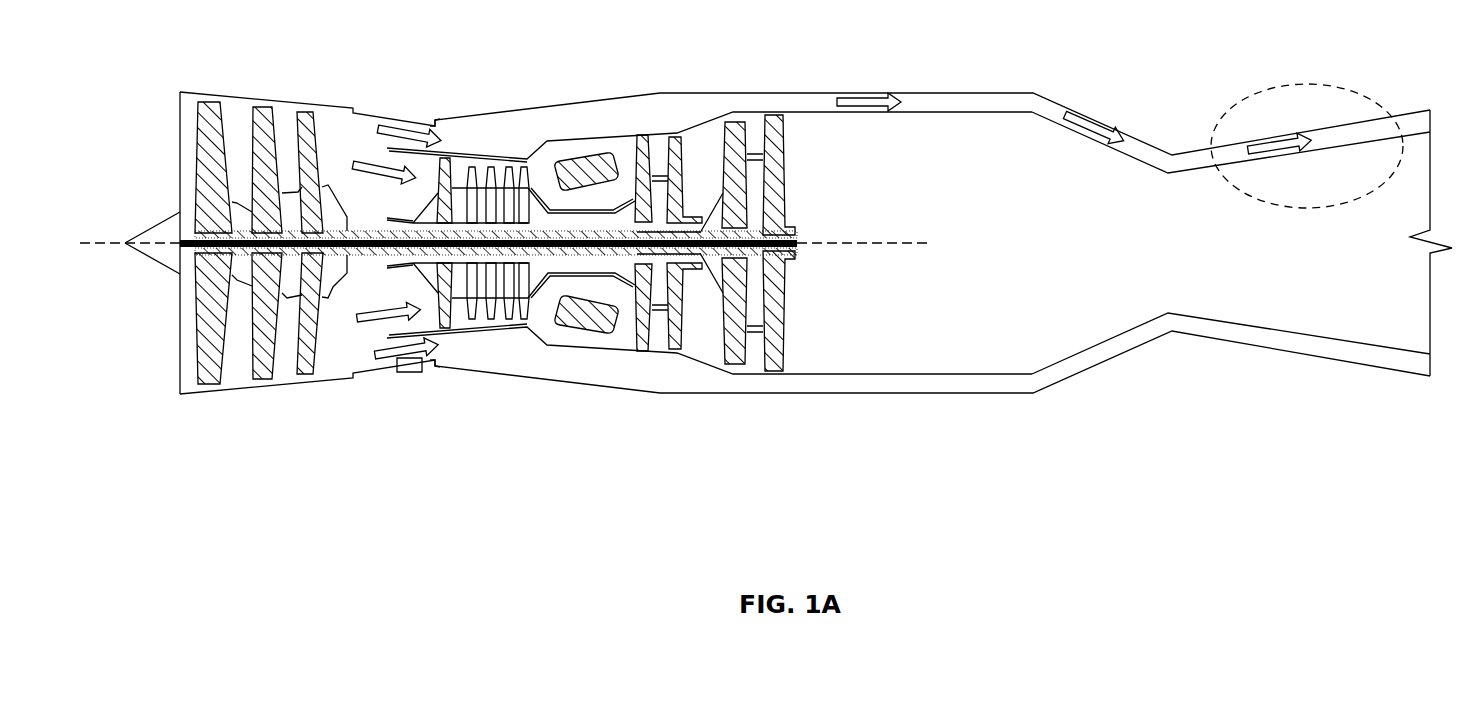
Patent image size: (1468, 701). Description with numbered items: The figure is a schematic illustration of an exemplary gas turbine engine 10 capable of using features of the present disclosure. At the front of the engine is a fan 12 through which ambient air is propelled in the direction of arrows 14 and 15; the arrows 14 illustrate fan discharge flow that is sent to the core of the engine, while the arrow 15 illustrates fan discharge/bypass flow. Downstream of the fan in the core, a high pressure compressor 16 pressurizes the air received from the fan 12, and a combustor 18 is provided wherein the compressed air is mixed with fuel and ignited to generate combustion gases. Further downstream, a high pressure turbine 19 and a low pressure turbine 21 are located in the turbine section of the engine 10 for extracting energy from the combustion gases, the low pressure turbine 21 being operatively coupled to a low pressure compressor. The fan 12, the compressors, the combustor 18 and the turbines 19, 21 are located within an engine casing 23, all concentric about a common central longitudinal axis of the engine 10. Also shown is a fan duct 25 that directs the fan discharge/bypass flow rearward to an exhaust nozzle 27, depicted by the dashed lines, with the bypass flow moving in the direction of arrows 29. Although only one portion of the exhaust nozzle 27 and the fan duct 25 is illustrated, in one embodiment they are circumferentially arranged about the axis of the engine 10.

The gas turbine engine 10 is at (216, 419).
The fan 12 is at (208, 104).
The arrows 14 is at (380, 163).
The arrow 15 is at (415, 136).
The high pressure compressor 16 is at (470, 170).
The combustor 18 is at (605, 157).
The high pressure turbine 19 is at (642, 137).
The low pressure turbine 21 is at (737, 132).
The engine casing 23 is at (437, 120).
The fan duct 25 is at (565, 117).
The exhaust nozzle 27 is at (1256, 116).
The arrows 29 is at (870, 94).